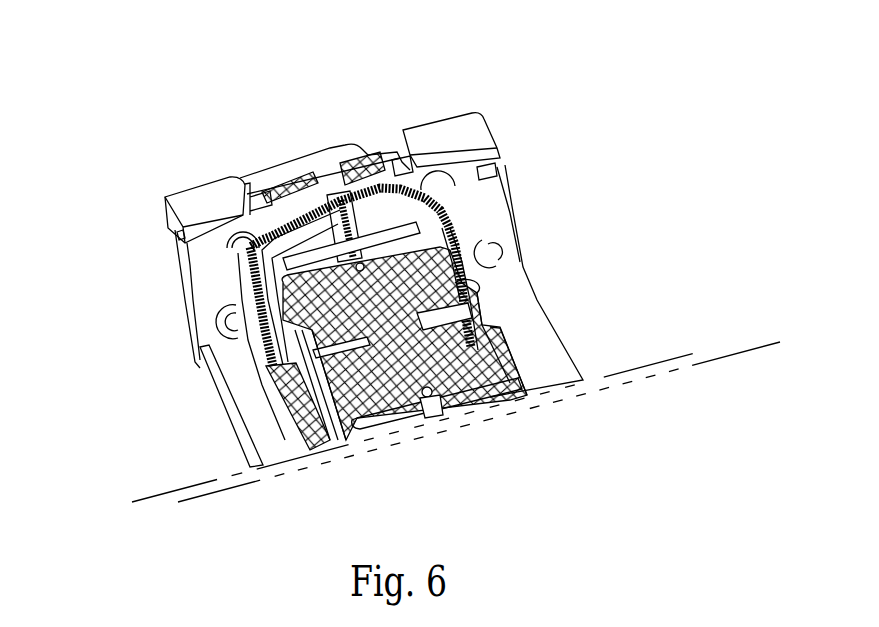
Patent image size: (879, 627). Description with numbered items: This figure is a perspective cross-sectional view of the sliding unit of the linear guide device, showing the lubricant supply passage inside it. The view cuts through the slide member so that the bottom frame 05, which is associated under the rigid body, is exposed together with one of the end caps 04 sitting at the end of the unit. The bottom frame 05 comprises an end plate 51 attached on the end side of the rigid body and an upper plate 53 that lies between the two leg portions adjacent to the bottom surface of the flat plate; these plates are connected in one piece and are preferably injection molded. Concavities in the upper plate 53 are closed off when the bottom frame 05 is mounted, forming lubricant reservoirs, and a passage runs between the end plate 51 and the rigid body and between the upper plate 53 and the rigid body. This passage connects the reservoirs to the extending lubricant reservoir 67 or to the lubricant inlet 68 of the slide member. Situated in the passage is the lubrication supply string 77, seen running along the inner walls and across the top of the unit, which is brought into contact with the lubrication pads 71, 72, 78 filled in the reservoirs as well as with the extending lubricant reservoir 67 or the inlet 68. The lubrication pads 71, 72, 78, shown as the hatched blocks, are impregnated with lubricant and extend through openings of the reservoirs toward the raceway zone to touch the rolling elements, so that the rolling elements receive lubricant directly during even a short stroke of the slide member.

The end cap 04 is at (456, 136).
The bottom frame 05 is at (236, 444).
The end plate 51 is at (220, 276).
The upper plate 53 is at (454, 309).
The extending lubricant reservoir 67 is at (378, 158).
The lubricant inlet 68 is at (323, 172).
The lubrication pad 71 is at (458, 352).
The lubrication pad 72 is at (298, 414).
The lubrication supply string 77 is at (348, 193).
The lubrication pad 78 is at (291, 195).